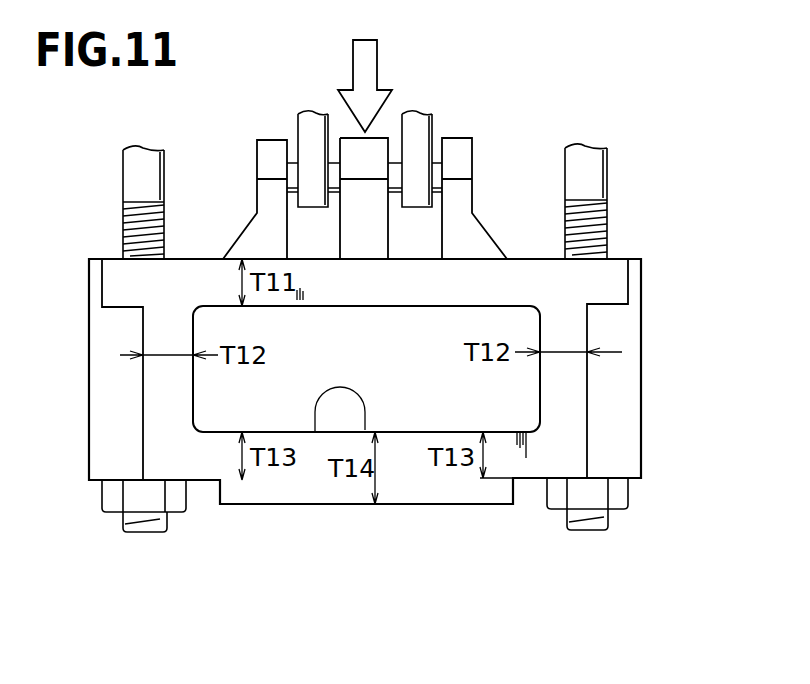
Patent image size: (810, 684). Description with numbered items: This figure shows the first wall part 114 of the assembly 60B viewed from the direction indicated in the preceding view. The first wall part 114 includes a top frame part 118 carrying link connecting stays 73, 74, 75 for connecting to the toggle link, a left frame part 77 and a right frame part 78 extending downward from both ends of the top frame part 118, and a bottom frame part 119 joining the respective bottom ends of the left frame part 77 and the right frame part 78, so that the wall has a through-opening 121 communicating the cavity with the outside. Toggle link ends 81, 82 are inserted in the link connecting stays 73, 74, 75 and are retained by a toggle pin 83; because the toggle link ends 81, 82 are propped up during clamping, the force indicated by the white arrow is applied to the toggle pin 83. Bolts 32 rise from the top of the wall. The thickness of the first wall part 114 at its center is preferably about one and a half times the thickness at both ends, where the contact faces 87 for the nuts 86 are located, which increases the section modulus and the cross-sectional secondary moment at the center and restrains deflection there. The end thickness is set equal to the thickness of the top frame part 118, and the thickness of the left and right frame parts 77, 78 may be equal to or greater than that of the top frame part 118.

The connector assembly 60B is at (672, 455).
The bolt 32 is at (138, 175).
The link connecting stay 73 is at (270, 153).
The link connecting stay 74 is at (378, 148).
The link connecting stay 75 is at (462, 147).
The toggle link end 81 is at (313, 122).
The toggle link end 82 is at (418, 120).
The toggle pin 83 is at (290, 188).
The left frame part 77 is at (173, 330).
The right frame part 78 is at (570, 323).
The nut 86 is at (112, 500).
The contact face 87 is at (207, 485).
The first wall part 114 is at (268, 505).
The top frame part 118 is at (513, 258).
The bottom frame part 119 is at (408, 452).
The through-opening 121 is at (315, 432).